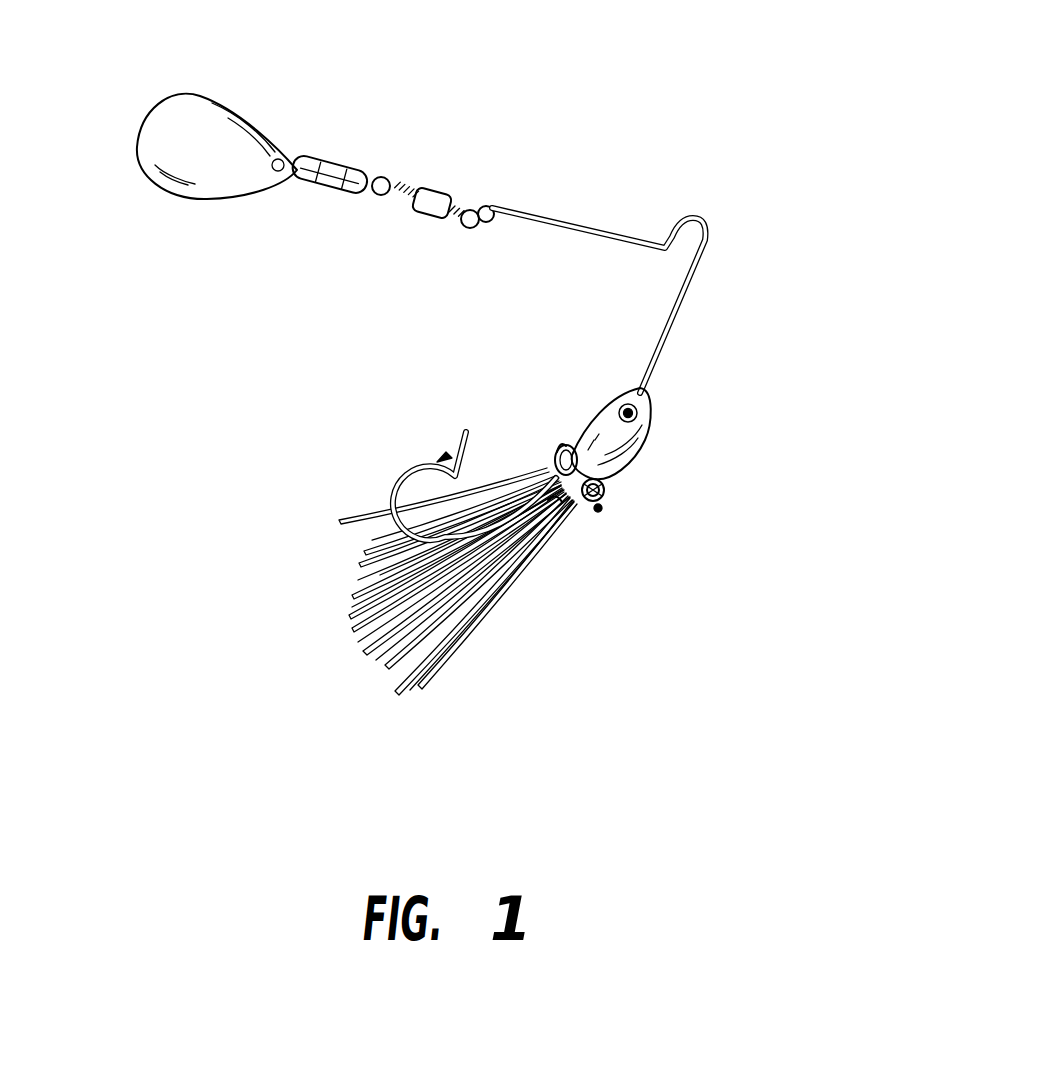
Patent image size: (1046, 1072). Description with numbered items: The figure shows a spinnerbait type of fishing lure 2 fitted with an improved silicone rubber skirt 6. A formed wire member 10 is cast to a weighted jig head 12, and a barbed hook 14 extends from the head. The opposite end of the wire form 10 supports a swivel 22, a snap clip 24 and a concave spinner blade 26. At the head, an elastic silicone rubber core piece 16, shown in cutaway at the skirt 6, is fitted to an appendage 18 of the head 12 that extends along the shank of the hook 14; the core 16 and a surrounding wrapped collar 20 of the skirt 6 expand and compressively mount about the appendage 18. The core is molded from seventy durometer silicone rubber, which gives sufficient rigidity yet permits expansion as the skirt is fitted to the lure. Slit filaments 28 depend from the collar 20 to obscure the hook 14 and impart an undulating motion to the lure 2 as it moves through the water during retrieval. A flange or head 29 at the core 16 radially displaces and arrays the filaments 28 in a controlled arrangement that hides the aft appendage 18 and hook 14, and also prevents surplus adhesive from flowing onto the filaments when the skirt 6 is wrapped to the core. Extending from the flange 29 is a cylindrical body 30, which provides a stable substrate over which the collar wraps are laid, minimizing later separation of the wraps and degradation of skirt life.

The fishing lure 2 is at (835, 413).
The skirt 6 is at (485, 625).
The formed wire member 10 is at (697, 272).
The weighted jig head 12 is at (652, 418).
The barbed hook 14 is at (427, 462).
The core piece 16 is at (600, 508).
The appendage 18 is at (550, 503).
The wrapped collar 20 is at (606, 487).
The swivel 22 is at (432, 190).
The snap clip 24 is at (338, 160).
The concave spinner blade 26 is at (150, 113).
The slit filaments 28 is at (350, 588).
The flange 29 is at (572, 448).
The cylindrical body 30 is at (557, 452).